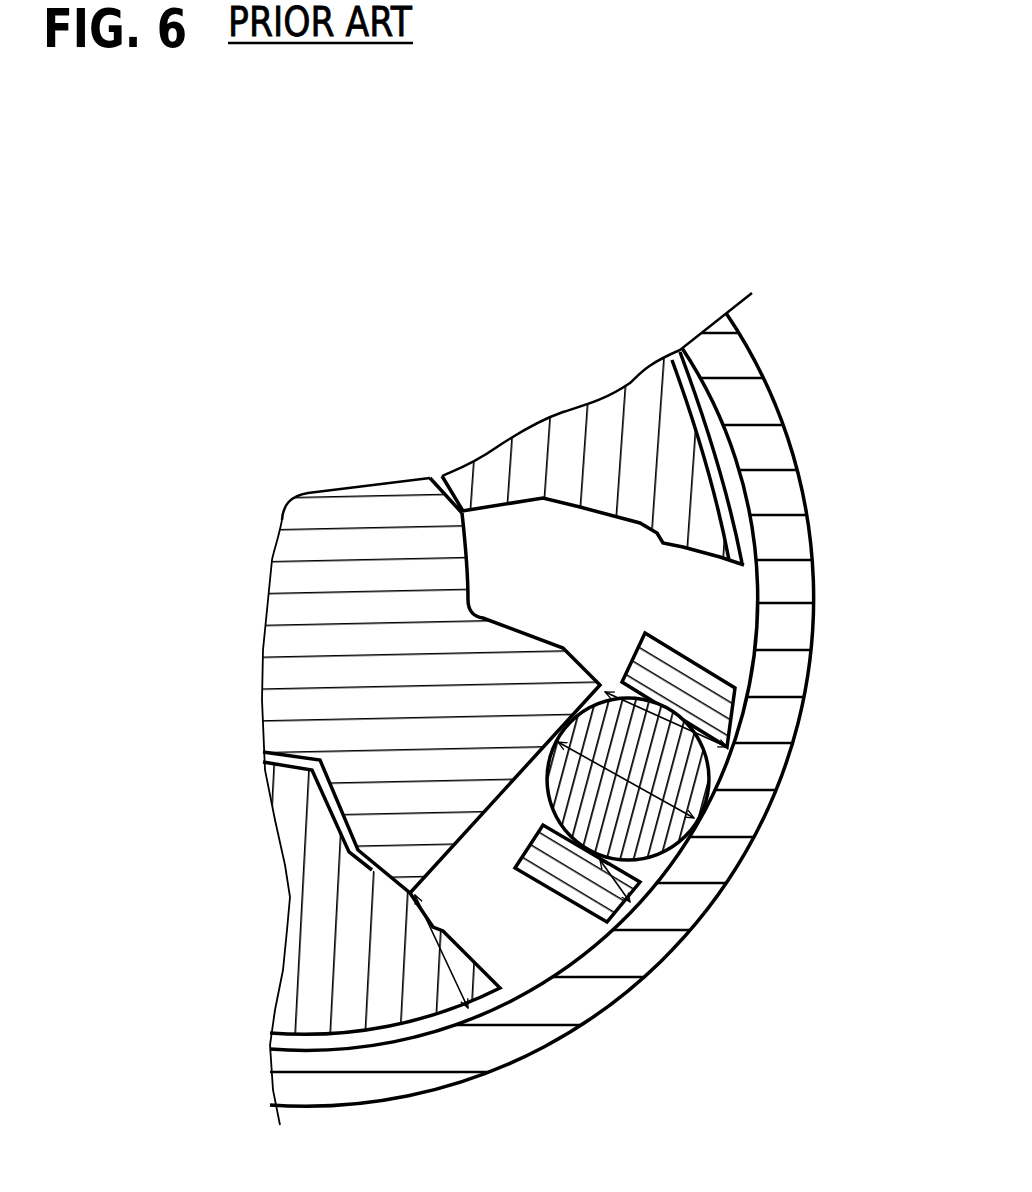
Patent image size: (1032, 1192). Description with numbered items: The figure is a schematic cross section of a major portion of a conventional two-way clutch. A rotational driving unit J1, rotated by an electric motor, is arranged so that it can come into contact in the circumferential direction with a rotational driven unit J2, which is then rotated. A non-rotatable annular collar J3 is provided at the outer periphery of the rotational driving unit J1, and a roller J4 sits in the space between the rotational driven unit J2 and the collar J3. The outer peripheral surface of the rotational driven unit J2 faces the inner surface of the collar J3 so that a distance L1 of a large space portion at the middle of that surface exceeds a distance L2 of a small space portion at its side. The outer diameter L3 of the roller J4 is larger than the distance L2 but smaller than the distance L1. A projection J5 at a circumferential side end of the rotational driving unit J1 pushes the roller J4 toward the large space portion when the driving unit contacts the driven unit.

The rotational driving unit J1 is at (593, 452).
The rotational driven unit J2 is at (518, 673).
The non-rotatable member (annular collar) J3 is at (790, 500).
The roller J4 is at (680, 763).
The projection J5 is at (713, 558).
The distance of large space portion L1 is at (593, 880).
The distance of small space portion L2 is at (680, 712).
The outer diameter of roller L3 is at (697, 835).